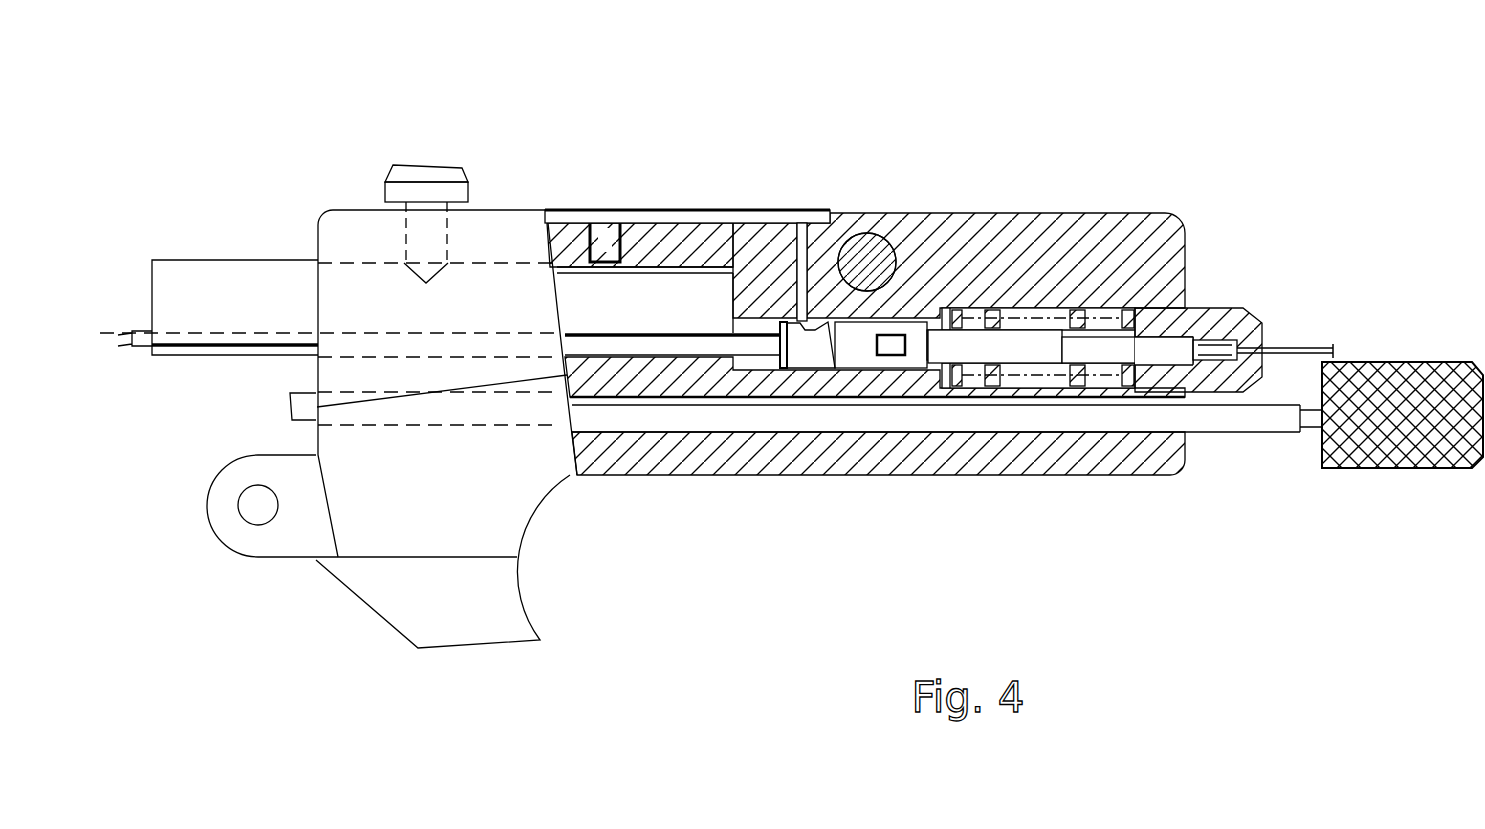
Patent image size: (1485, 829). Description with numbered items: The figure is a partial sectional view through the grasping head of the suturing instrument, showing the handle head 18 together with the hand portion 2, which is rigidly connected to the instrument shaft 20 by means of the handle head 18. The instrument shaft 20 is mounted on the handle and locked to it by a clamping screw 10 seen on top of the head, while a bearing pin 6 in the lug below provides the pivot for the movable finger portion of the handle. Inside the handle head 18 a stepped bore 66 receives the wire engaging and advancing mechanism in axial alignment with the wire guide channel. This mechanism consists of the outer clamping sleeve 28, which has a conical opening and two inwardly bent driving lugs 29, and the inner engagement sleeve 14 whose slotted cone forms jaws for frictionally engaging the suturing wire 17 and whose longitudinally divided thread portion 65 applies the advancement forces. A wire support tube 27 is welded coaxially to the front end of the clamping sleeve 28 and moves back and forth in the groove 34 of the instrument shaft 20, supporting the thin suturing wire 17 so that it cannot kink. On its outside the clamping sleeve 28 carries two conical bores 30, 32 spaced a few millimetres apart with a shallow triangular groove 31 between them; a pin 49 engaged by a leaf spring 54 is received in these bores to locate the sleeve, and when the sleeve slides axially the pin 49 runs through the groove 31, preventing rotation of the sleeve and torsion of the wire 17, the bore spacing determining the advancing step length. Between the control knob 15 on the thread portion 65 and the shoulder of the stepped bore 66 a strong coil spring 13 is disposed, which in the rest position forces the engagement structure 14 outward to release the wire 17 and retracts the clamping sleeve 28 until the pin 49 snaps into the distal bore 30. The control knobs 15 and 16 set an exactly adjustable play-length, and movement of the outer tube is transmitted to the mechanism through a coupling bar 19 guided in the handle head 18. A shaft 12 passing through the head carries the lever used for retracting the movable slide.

The hand portion 2 is at (494, 608).
The bearing pin 6 is at (230, 515).
The clamping screw 10 is at (455, 187).
The shaft 12 is at (880, 258).
The coil spring 13 is at (1004, 375).
The inner engagement sleeve 14 is at (1030, 350).
The control knob 15 is at (1222, 312).
The control knob 16 is at (1430, 447).
The suturing wire 17 is at (1310, 348).
The handle head 18 is at (1144, 230).
The coupling bar 19 is at (640, 415).
The instrument shaft 20 is at (282, 282).
The wire support tube 27 is at (140, 330).
The outer clamping sleeve 28 is at (893, 340).
The driving lugs 29 is at (907, 322).
The conical bore 30 is at (795, 340).
The triangular groove 31 is at (816, 345).
The conical bore 32 is at (855, 345).
The groove 34 is at (207, 350).
The pin 49 is at (810, 248).
The leaf spring 54 is at (712, 222).
The thread portion 65 is at (1114, 348).
The stepped bore 66 is at (1025, 318).